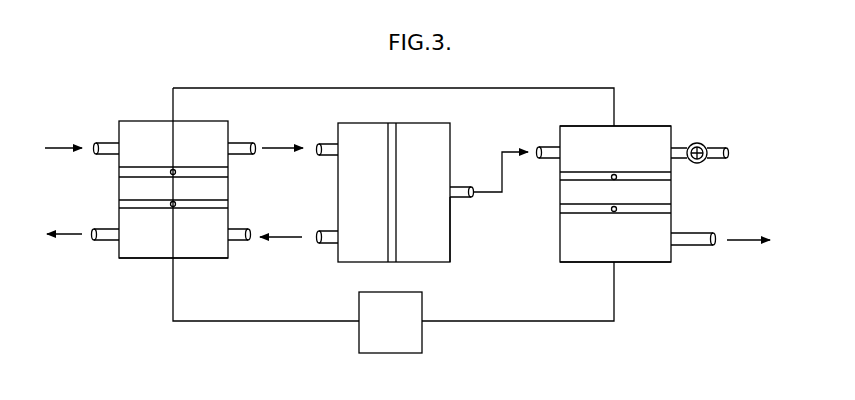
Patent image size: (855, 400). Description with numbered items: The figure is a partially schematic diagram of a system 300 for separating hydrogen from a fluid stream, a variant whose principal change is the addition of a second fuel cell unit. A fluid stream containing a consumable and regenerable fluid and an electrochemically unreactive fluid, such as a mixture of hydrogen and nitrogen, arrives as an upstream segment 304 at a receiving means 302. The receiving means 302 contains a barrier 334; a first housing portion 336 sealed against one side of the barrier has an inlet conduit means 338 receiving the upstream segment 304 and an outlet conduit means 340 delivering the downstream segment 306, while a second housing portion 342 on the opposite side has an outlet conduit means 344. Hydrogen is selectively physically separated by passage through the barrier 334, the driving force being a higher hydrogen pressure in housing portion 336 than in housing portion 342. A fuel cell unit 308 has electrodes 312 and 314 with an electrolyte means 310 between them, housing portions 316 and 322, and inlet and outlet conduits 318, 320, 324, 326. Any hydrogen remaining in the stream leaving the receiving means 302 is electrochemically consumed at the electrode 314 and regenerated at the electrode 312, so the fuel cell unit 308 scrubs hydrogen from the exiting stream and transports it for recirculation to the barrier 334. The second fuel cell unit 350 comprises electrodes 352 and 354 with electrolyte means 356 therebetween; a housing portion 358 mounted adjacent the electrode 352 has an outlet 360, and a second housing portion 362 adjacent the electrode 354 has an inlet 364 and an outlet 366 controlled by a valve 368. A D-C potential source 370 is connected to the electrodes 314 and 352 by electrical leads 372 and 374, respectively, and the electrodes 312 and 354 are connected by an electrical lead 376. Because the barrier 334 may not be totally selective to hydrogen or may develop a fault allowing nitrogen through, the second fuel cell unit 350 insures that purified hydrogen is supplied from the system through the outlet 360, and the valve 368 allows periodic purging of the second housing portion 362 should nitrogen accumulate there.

The system 300 is at (522, 86).
The receiving means 302 is at (455, 128).
The upstream segment of fluid stream 304 is at (56, 146).
The downstream segment of fluid stream 306 is at (70, 236).
The fuel cell unit 308 is at (148, 118).
The electrolyte means 310 is at (130, 187).
The electrode 312 is at (197, 170).
The electrode 314 is at (146, 205).
The housing portion 316 is at (202, 173).
The inlet conduit 318 is at (103, 143).
The outlet conduit 320 is at (245, 143).
The housing portion 322 is at (198, 260).
The inlet conduit 324 is at (238, 242).
The outlet conduit 326 is at (110, 242).
The barrier 334 is at (397, 165).
The first housing portion 336 is at (365, 123).
The inlet conduit means 338 is at (320, 143).
The outlet conduit means 340 is at (320, 245).
The second housing portion 342 is at (450, 223).
The outlet conduit means 344 is at (463, 186).
The second fuel cell unit 350 is at (645, 125).
The electrode 352 is at (587, 213).
The electrode 354 is at (637, 172).
The electrolyte means 356 is at (657, 193).
The valve housing bottom 358 is at (641, 263).
The outlet 360 is at (698, 245).
The second housing portion 362 is at (582, 126).
The inlet 364 is at (540, 159).
The outlet 366 is at (727, 150).
The valve 368 is at (697, 142).
The D-C potential source 370 is at (422, 340).
The electrical lead 372 is at (283, 322).
The electrical lead 374 is at (543, 323).
The electrical lead 376 is at (286, 87).